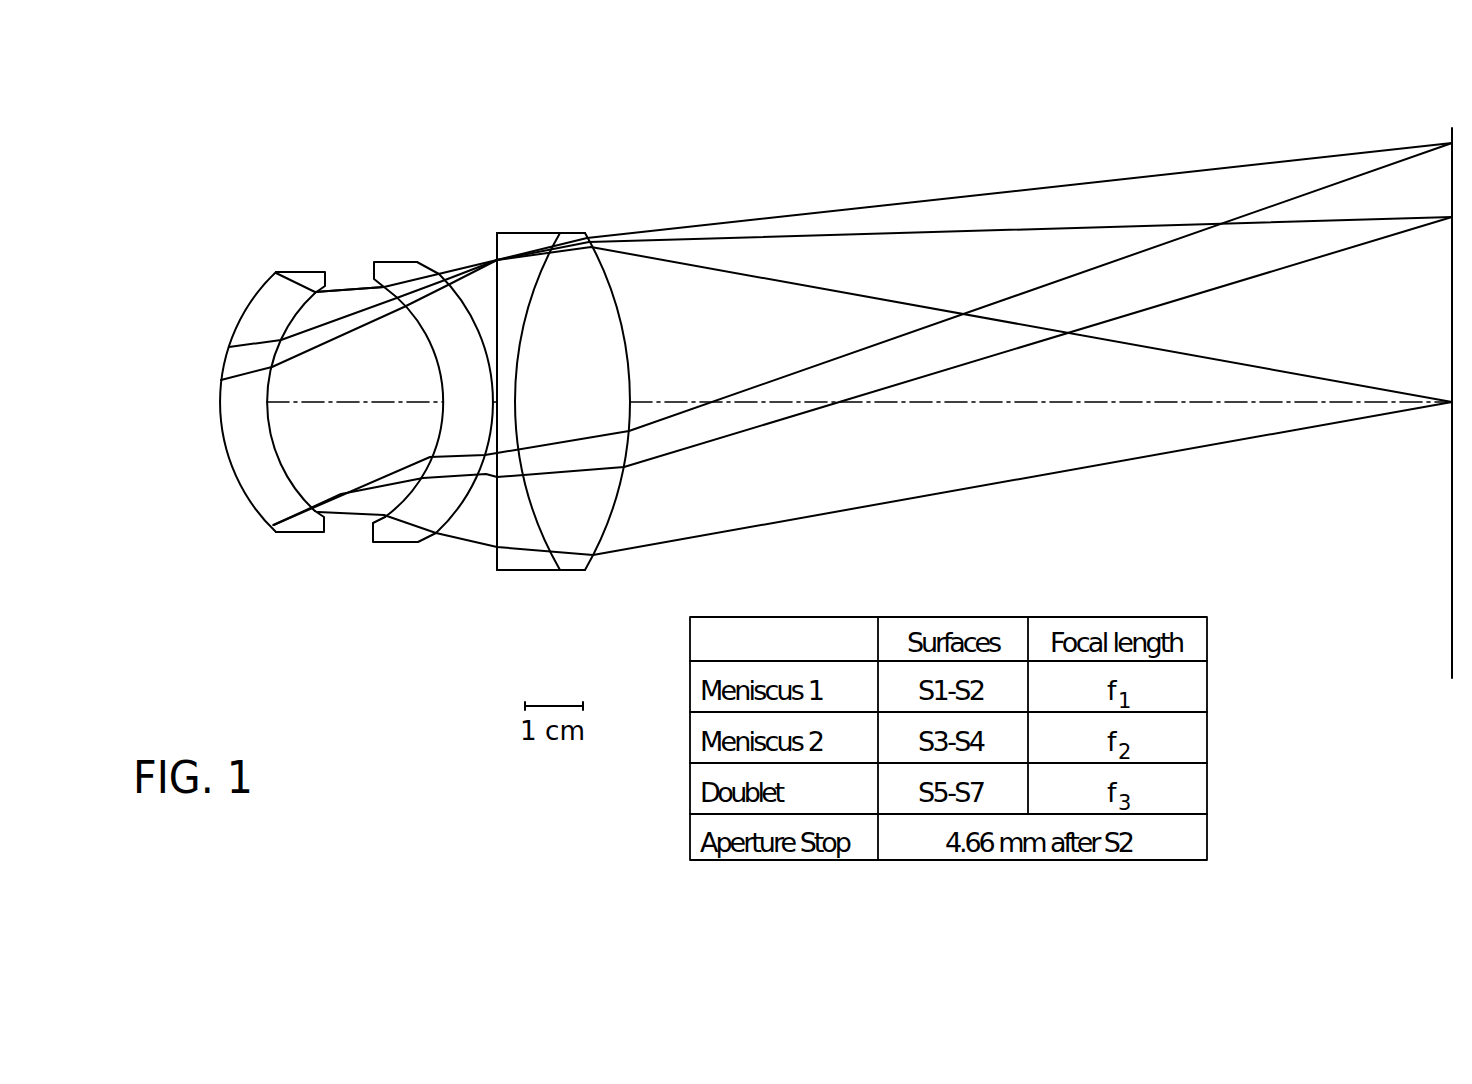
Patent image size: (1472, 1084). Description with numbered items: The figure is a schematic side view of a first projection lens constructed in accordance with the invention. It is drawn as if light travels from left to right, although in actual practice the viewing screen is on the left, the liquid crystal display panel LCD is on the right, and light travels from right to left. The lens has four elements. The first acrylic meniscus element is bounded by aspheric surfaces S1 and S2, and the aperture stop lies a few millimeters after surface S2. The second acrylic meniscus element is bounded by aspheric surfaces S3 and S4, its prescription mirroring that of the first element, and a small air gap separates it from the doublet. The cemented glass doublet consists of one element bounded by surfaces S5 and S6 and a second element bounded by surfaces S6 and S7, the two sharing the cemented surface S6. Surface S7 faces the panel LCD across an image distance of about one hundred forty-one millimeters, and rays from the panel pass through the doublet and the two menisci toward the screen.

The first surface of first meniscus element S1 is at (258, 514).
The second surface of first meniscus element S2 is at (301, 491).
The first surface of second meniscus element S3 is at (396, 508).
The second surface of second meniscus element S4 is at (418, 537).
The first surface of doublet S5 is at (498, 540).
The cemented surface of doublet S6 is at (556, 556).
The last surface of doublet S7 is at (602, 521).
The LCD panel LCD is at (1453, 608).